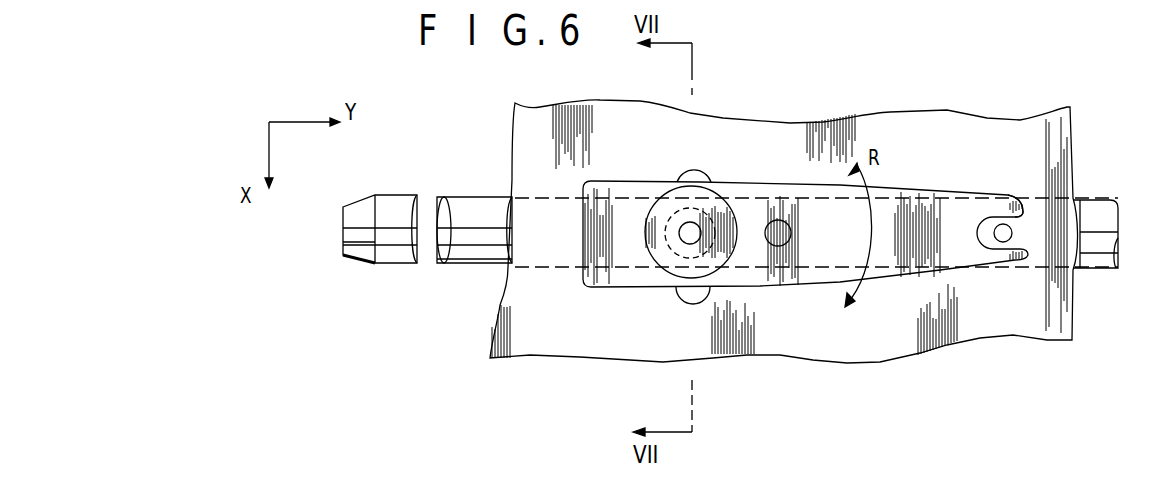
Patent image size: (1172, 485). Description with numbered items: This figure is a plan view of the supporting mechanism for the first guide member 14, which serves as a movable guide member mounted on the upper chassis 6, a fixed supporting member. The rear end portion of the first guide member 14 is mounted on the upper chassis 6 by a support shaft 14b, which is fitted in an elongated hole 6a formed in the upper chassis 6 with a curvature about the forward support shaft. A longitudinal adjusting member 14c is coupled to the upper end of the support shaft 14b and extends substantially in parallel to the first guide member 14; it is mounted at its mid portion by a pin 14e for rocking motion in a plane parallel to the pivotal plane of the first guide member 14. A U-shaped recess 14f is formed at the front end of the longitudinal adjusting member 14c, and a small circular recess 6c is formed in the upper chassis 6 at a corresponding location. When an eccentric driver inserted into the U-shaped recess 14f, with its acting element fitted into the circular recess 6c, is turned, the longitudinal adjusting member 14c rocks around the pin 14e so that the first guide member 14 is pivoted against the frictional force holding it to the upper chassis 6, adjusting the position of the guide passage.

The upper chassis 6 is at (503, 341).
The elongated hole 6a is at (703, 292).
The small circular recess 6c is at (1002, 242).
The first guide member 14 is at (473, 253).
The support shaft 14b is at (690, 233).
The longitudinal adjusting member 14c is at (825, 190).
The pin 14e is at (778, 246).
The U-shaped recess 14f is at (1015, 202).